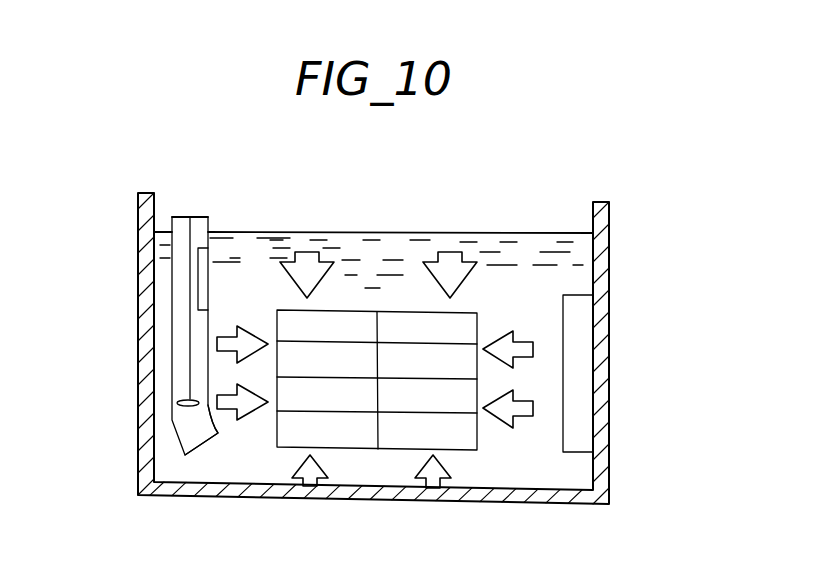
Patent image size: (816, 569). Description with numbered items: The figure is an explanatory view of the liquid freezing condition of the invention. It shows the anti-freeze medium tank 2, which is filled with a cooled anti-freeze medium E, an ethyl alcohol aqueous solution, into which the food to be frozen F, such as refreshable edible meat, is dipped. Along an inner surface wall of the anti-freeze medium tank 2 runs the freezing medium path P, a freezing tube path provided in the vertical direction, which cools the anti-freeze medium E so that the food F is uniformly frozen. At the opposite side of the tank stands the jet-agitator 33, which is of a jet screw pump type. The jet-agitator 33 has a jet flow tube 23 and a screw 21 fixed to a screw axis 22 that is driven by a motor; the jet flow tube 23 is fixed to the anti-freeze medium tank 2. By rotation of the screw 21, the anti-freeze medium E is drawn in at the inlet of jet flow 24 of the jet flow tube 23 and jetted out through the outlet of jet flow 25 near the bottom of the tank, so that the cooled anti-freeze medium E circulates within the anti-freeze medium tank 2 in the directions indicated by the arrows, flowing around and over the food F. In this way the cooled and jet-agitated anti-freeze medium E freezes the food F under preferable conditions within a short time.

The anti-freeze medium tank 2 is at (604, 276).
The screw 21 is at (182, 406).
The screw axis 22 is at (187, 364).
The jet flow tube 23 is at (171, 340).
The inlet of jet flow 24 is at (203, 272).
The outlet of jet flow 25 is at (208, 443).
The jet-agitator 33 is at (203, 222).
The anti-freeze medium E is at (403, 233).
The food to be frozen F is at (407, 400).
The freezing medium path P is at (580, 421).